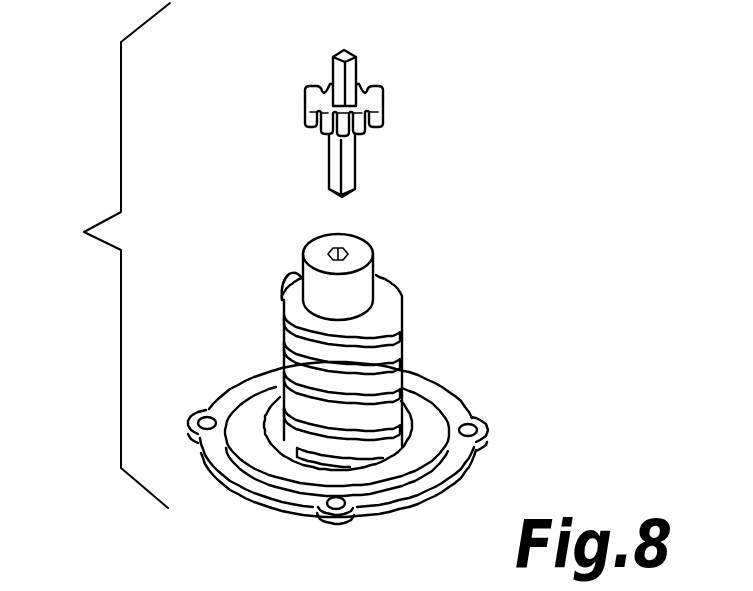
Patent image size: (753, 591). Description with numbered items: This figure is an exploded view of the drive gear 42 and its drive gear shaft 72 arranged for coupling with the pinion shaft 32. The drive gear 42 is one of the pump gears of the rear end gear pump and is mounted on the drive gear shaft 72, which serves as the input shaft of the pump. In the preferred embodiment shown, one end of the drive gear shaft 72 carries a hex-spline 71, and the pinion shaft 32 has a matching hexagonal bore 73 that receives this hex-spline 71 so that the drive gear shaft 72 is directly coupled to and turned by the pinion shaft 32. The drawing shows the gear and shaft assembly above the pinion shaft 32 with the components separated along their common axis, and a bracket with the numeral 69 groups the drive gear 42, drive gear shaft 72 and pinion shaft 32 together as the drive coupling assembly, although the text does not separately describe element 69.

The drive gear assembly 69 is at (105, 255).
The hex-spline 71 is at (320, 106).
The drive gear shaft 72 is at (333, 73).
The drive gear 42 is at (310, 120).
The hexagonal bore 73 is at (319, 351).
The pinion shaft 32 is at (320, 292).